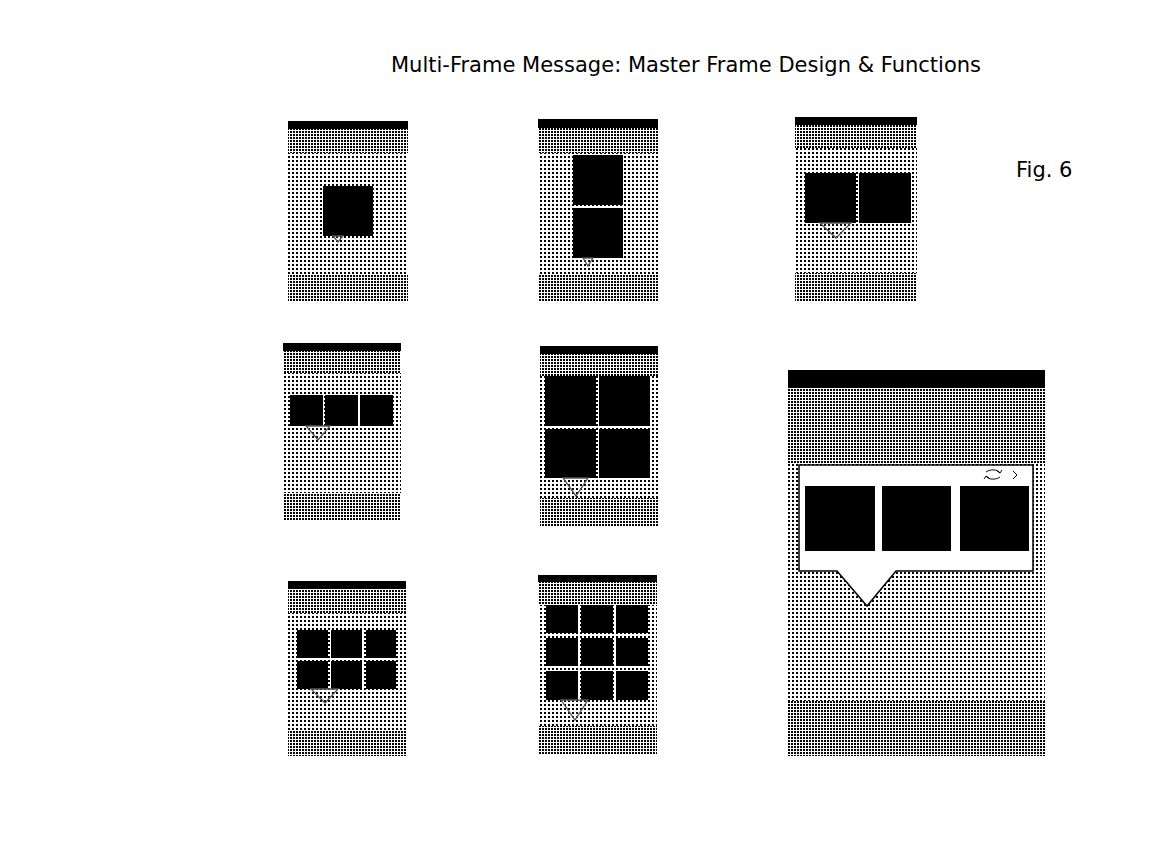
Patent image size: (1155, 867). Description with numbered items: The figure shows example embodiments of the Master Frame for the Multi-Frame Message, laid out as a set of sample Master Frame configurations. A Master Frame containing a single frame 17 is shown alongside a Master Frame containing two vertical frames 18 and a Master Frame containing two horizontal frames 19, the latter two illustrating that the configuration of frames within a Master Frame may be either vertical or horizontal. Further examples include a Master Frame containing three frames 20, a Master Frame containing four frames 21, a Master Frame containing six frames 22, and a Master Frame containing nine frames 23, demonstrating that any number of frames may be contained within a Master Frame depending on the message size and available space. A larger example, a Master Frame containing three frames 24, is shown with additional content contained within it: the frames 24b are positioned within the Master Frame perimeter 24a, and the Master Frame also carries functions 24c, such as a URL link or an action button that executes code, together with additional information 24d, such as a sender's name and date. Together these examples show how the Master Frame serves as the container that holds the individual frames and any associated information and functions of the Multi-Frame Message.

The Master Frame containing a single frame 17 is at (270, 202).
The Master Frame containing two vertical frames 18 is at (518, 204).
The Master Frame containing two horizontal frames 19 is at (780, 206).
The Master Frame containing three frames 20 is at (268, 427).
The Master Frame containing four frames 21 is at (520, 426).
The Master Frame containing six frames 22 is at (273, 657).
The Master Frame containing nine frames 23 is at (522, 645).
The Master Frame containing three frames with additional information and functions 24 is at (768, 503).
The Master Frame perimeter 24a is at (1017, 455).
The frames 24b is at (1023, 518).
The functions 24c is at (795, 560).
The additional information 24d is at (1022, 556).